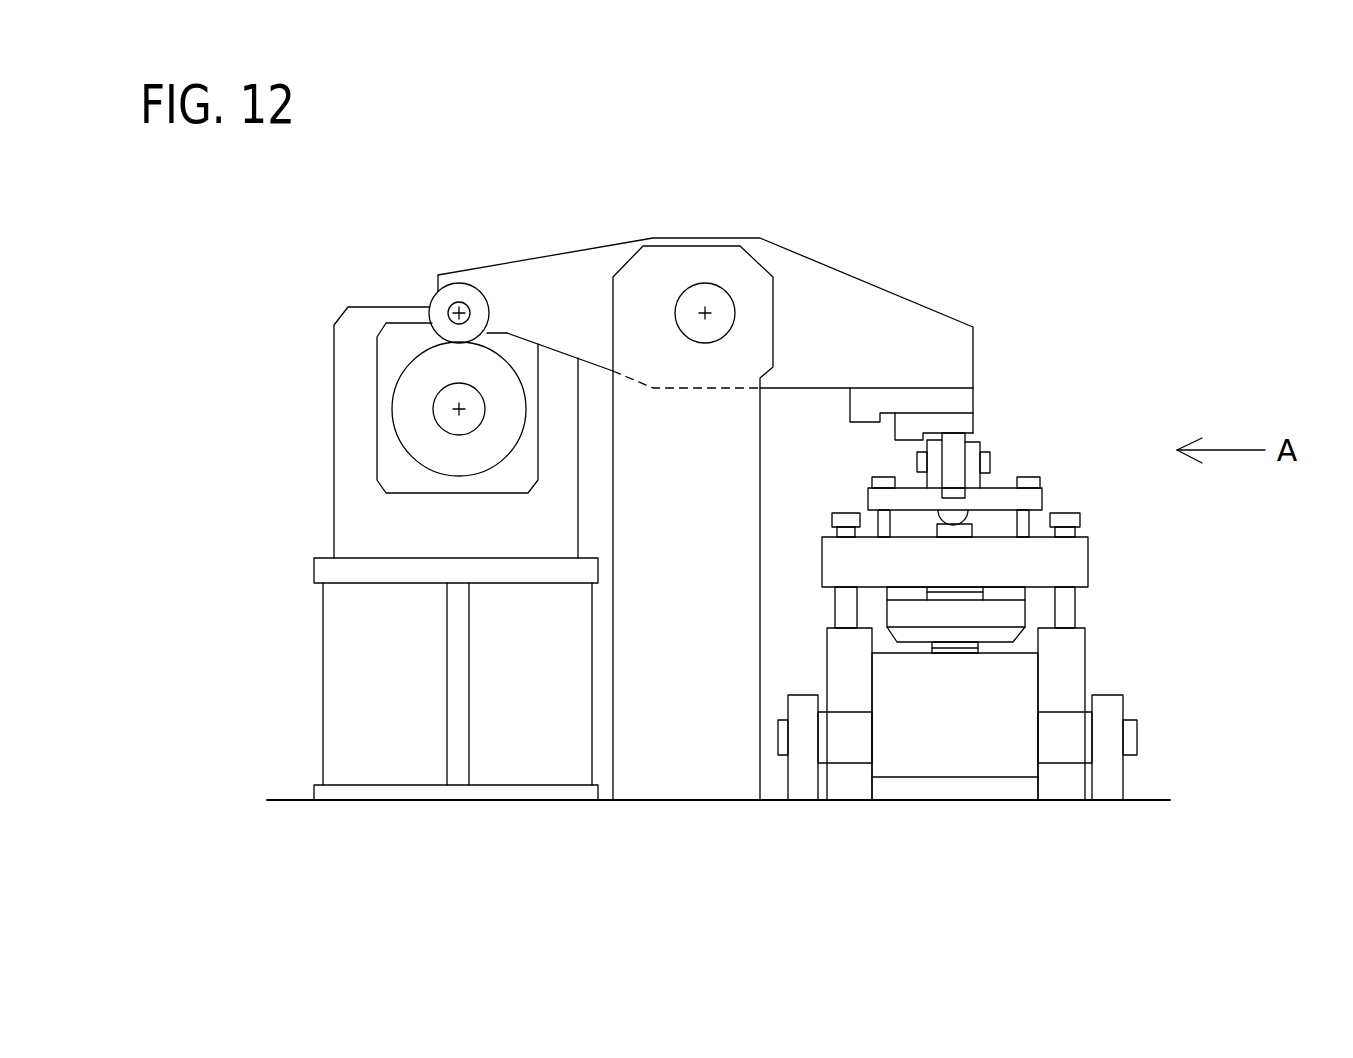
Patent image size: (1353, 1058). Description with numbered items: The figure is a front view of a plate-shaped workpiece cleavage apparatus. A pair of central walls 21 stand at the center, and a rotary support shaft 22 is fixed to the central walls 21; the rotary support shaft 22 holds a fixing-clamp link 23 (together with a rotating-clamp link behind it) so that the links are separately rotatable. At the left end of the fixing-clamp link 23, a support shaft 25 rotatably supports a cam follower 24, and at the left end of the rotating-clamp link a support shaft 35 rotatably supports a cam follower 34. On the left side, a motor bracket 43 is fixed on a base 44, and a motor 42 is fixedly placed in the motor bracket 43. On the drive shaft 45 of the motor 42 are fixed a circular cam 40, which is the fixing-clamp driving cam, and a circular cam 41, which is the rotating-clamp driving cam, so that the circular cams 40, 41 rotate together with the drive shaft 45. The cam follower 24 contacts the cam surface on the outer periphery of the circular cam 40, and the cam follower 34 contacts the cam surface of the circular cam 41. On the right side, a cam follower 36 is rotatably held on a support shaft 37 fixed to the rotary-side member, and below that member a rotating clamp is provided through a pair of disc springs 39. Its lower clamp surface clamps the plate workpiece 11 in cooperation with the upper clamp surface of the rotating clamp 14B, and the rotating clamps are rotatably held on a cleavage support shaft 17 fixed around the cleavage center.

The plate workpiece 11 is at (958, 650).
The rotating clamp 14B is at (955, 763).
The cleavage support shaft 17 is at (1128, 722).
The central walls 21 is at (698, 260).
The rotary support shaft 22 is at (723, 288).
The fixing-clamp link 23 is at (867, 280).
The cam follower 24 is at (445, 270).
The cam follower 34 is at (445, 270).
The support shaft 25 is at (450, 307).
The support shaft 35 is at (408, 288).
The cam follower 36 is at (955, 450).
The support shaft 37 is at (992, 462).
The disc springs 39 is at (907, 590).
The circular cam 40 is at (374, 409).
The circular cam 41 is at (374, 409).
The motor 42 is at (378, 362).
The motor bracket 43 is at (334, 488).
The base 44 is at (333, 664).
The drive shaft 45 is at (433, 409).